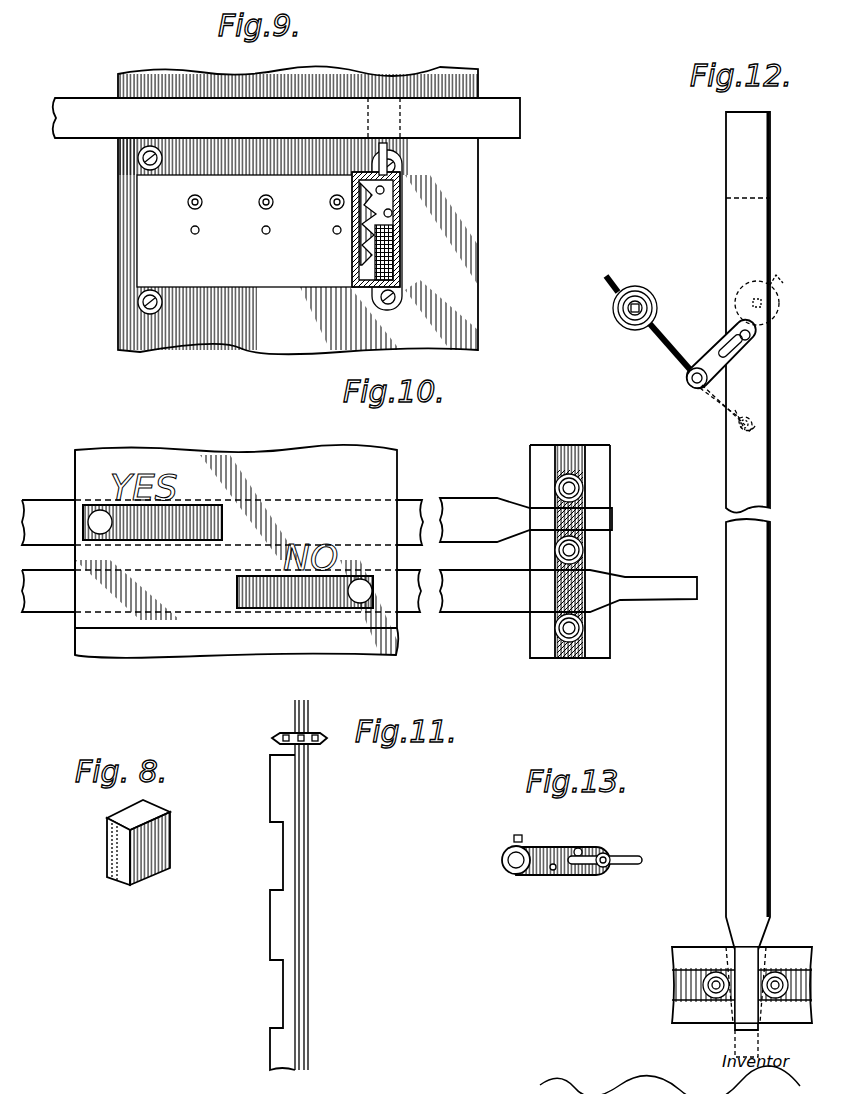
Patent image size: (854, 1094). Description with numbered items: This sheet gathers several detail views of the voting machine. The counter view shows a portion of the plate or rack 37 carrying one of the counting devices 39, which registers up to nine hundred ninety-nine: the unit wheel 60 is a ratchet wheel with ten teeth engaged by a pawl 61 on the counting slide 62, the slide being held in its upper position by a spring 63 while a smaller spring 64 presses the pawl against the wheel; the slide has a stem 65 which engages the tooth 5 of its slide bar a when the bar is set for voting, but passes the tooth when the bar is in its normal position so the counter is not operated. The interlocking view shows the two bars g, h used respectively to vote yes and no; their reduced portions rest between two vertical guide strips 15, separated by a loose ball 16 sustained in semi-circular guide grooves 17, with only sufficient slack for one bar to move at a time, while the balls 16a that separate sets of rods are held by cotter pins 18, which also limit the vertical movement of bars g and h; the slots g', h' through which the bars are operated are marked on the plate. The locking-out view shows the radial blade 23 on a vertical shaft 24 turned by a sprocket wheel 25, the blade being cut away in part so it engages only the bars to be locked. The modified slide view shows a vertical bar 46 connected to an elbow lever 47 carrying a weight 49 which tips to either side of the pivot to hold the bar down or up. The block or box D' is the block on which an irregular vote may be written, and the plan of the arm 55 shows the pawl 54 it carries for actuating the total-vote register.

In FIG. 9, the tooth 5 is at (384, 118).
In FIG. 9, the plate or rack 37 is at (468, 250).
In FIG. 9, the counting devices 39 is at (269, 230).
In FIG. 9, the unit wheel 60 is at (352, 232).
In FIG. 9, the pawl 61 is at (385, 203).
In FIG. 9, the counting slide 62 is at (395, 188).
In FIG. 9, the spring 63 is at (398, 247).
In FIG. 9, the smaller spring 64 is at (392, 216).
In FIG. 9, the stem 65 is at (379, 155).
In FIG. 9, the bar a is at (520, 118).
In FIG. 10, the bar g is at (317, 521).
In FIG. 10, the bar h is at (359, 591).
In FIG. 10, the slot g' is at (152, 536).
In FIG. 10, the slot h' is at (305, 614).
In FIG. 10, the vertical guide strips 15 is at (586, 551).
In FIG. 10, the ball 16 is at (578, 548).
In FIG. 10, the ball 16a is at (575, 490).
In FIG. 10, the semi-circular guide grooves 17 is at (566, 658).
In FIG. 10, the cotter pins 18 is at (555, 472).
In FIG. 12, the bar 46 is at (760, 472).
In FIG. 12, the elbow lever 47 is at (673, 352).
In FIG. 12, the weight 49 is at (656, 304).
In FIG. 11, the radial blade 23 is at (265, 912).
In FIG. 11, the vertical shaft 24 is at (295, 718).
In FIG. 11, the sprocket wheel 25 is at (318, 746).
In FIG. 8, the block or box D' is at (117, 842).
In FIG. 13, the pawl 54 is at (617, 873).
In FIG. 13, the arm 55 is at (540, 873).